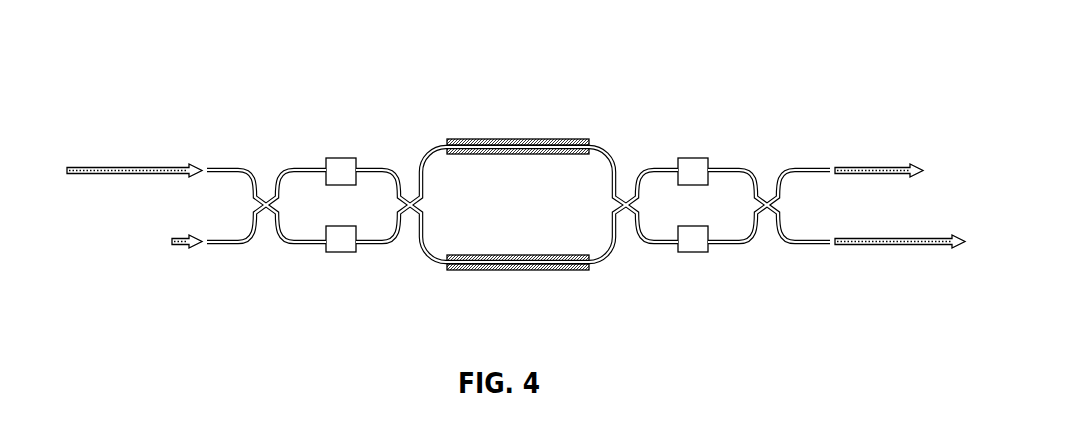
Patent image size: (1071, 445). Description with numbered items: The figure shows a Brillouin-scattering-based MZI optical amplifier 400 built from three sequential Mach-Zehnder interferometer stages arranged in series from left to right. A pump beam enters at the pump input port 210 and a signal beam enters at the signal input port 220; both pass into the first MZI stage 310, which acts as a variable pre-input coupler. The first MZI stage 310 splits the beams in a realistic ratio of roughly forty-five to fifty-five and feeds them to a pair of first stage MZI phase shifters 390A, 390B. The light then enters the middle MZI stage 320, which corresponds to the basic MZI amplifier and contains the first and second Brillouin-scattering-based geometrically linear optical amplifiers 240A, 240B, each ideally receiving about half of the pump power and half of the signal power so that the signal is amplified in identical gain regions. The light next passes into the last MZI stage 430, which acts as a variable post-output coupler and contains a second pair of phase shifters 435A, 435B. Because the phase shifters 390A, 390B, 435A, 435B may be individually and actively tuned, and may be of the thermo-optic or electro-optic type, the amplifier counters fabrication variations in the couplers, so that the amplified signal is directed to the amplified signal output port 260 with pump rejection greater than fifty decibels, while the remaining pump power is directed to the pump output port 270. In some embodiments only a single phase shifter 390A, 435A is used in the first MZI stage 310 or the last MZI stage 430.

The MZI optical amplifier 400 is at (520, 50).
The pump input port 210 is at (202, 160).
The signal input port 220 is at (202, 250).
The first MZI stage 310 is at (308, 206).
The first stage MZI phase shifter 390A is at (340, 155).
The first stage MZI phase shifter 390B is at (323, 223).
The middle MZI stage 320 is at (499, 206).
The first Brillouin-scattering-based geometrically linear optical amplifier 240A is at (533, 132).
The second Brillouin-scattering-based geometrically linear optical amplifier 240B is at (435, 271).
The last MZI stage 430 is at (731, 206).
The last stage phase shifter 435A is at (697, 155).
The last stage phase shifter 435B is at (707, 218).
The amplified signal output port 260 is at (837, 167).
The pump output port 270 is at (837, 250).